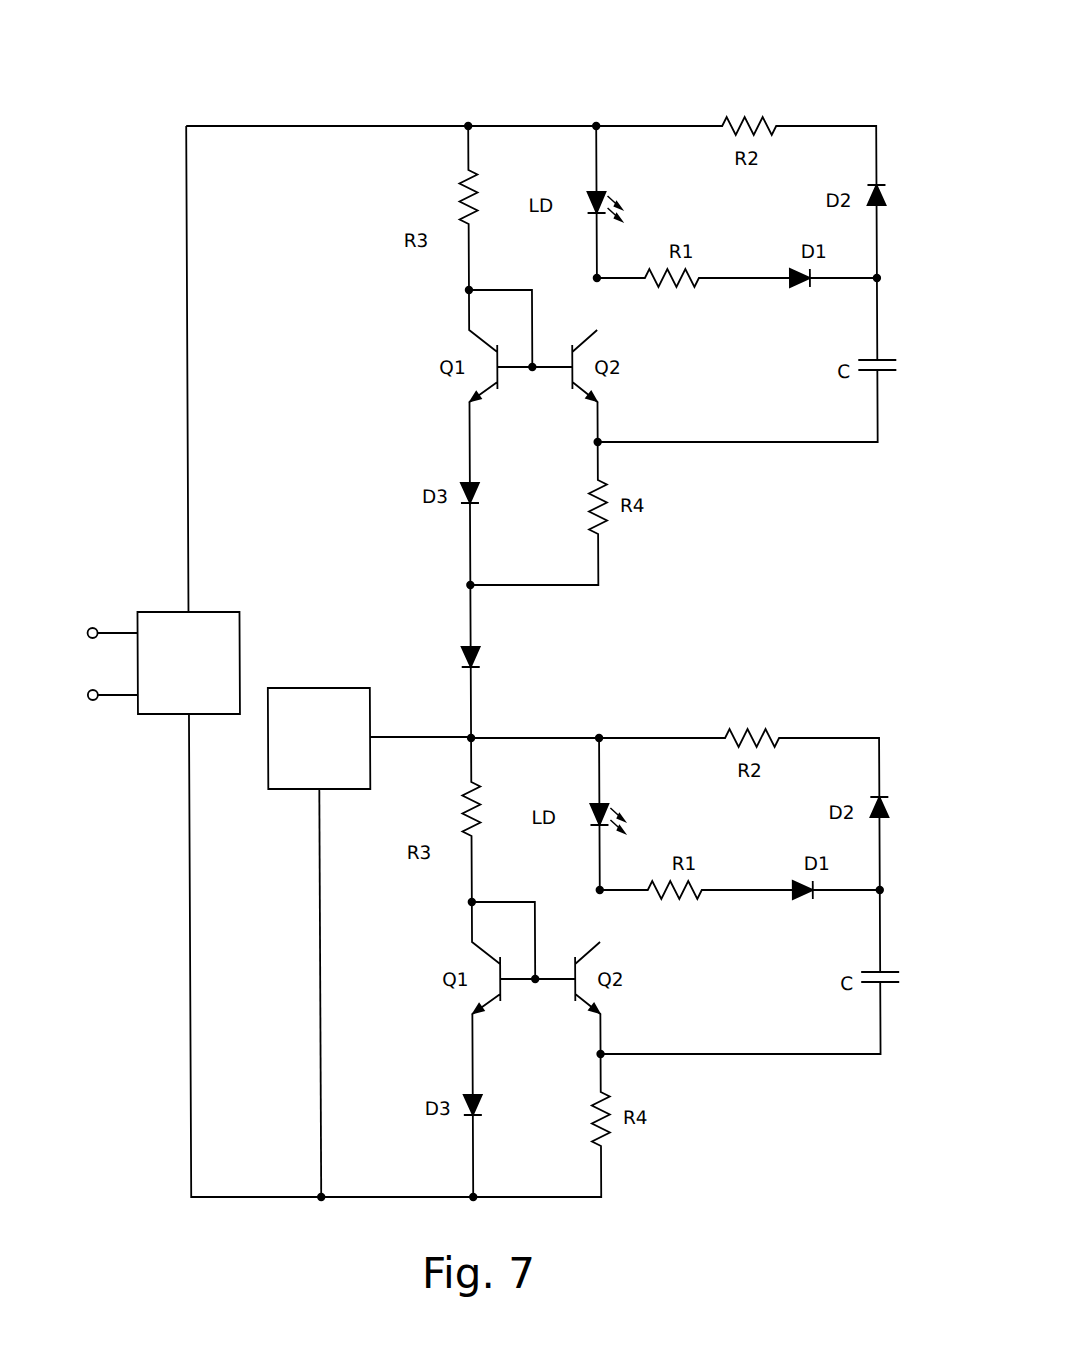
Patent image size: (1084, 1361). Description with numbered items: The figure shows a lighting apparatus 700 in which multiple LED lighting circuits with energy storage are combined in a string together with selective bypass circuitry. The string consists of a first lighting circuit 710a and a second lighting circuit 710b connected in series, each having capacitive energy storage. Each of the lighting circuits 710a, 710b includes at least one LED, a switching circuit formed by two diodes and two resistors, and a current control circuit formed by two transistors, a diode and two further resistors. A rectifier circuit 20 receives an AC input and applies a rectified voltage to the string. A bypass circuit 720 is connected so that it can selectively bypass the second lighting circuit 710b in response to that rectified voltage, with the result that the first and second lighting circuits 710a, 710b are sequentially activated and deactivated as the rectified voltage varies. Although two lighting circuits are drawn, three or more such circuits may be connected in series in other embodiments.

The lighting apparatus 700 is at (480, 610).
The first lighting circuit 710a is at (634, 94).
The second lighting circuit 710b is at (617, 692).
The rectifier circuit 20 is at (216, 612).
The bypass circuit 720 is at (318, 688).